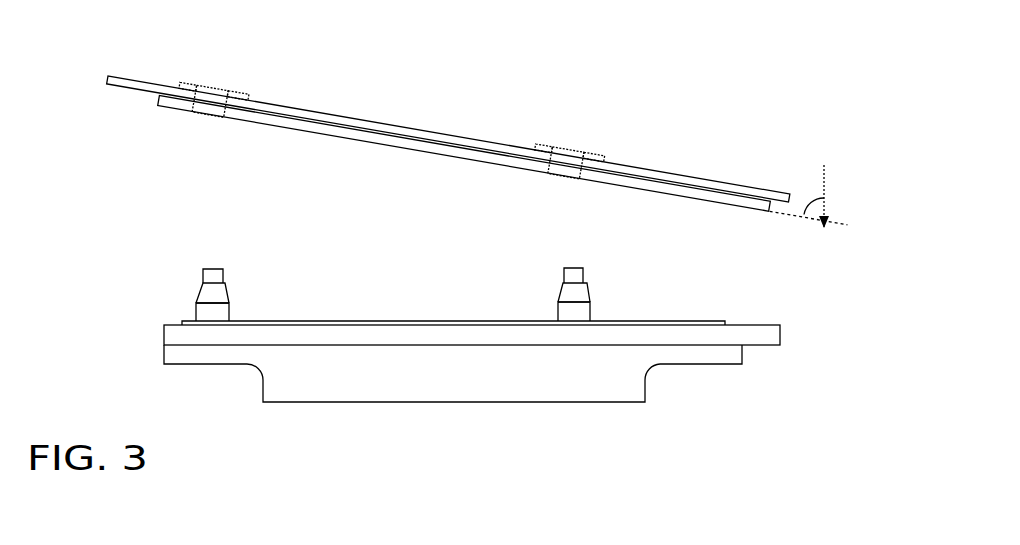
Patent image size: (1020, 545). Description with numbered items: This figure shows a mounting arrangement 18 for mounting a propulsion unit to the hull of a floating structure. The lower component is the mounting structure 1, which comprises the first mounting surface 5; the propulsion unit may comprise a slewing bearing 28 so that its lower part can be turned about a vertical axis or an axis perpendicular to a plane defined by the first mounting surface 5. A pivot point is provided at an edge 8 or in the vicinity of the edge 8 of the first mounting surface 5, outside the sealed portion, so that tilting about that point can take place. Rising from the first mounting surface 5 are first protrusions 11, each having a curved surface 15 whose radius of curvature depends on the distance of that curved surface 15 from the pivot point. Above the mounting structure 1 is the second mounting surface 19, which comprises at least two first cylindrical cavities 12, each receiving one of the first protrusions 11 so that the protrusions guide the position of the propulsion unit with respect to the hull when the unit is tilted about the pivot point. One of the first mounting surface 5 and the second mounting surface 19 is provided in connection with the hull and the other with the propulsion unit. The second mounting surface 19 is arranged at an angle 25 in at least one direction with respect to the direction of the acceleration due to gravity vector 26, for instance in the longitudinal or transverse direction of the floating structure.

The mounting structure 1 is at (722, 410).
The first mounting surface 5 is at (327, 308).
The edge 8 is at (773, 307).
The first protrusion 11 is at (210, 313).
The first cylindrical cavity 12 is at (218, 110).
The curved surface 15 is at (196, 312).
The mounting arrangement 18 is at (420, 68).
The second mounting surface 19 is at (370, 153).
The angle 25 is at (815, 198).
The acceleration due to gravity vector 26 is at (827, 187).
The slewing bearing 28 is at (733, 353).